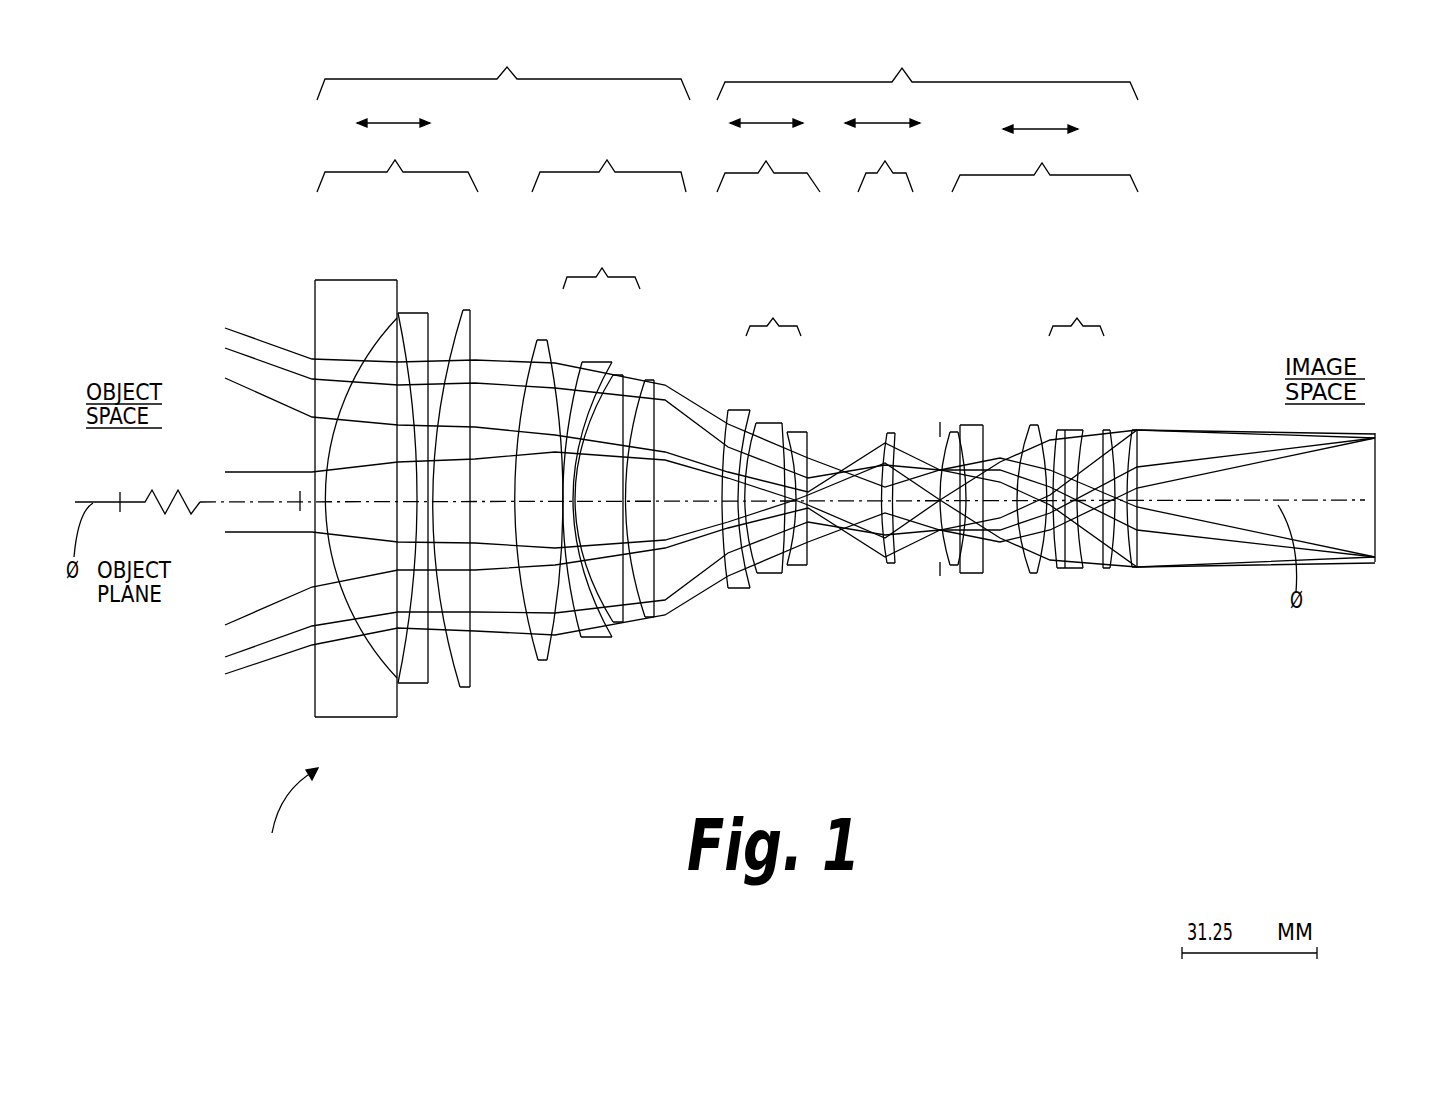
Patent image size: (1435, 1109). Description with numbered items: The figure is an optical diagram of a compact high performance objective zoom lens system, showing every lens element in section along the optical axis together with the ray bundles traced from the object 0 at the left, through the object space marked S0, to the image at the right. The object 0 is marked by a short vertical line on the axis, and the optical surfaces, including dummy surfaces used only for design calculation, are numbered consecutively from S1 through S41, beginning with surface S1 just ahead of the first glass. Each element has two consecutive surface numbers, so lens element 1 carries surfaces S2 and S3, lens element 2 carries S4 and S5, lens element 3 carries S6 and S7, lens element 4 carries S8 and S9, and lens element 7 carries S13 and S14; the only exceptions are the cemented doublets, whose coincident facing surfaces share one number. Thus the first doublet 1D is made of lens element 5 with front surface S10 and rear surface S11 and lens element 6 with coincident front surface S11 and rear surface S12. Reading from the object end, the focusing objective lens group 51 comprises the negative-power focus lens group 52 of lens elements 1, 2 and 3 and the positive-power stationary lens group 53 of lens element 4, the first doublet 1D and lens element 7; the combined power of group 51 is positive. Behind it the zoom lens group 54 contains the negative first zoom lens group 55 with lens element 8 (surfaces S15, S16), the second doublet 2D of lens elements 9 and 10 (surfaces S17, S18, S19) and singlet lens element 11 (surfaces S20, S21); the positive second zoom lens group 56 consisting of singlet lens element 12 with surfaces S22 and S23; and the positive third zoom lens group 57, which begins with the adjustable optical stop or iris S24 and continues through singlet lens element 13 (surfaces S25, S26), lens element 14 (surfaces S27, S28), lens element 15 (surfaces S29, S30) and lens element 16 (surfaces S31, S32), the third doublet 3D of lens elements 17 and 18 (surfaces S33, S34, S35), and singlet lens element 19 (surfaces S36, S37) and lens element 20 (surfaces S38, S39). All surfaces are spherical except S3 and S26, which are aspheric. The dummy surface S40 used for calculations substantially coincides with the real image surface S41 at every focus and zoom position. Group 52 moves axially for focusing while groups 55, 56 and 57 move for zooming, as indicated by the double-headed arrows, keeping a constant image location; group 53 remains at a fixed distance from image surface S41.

The object 0 is at (120, 519).
The lens element 1 is at (322, 472).
The lens element 2 is at (404, 503).
The lens element 3 is at (481, 520).
The lens element 4 is at (530, 500).
The lens element 5 is at (591, 525).
The lens element 6 is at (626, 527).
The lens element 7 is at (678, 496).
The lens element 8 is at (740, 515).
The lens element 9 is at (742, 519).
The lens element 10 is at (804, 490).
The lens element 11 is at (829, 484).
The lens element 12 is at (893, 549).
The lens element 13 is at (935, 548).
The lens element 14 is at (976, 556).
The lens element 15 is at (1006, 548).
The lens element 16 is at (1049, 557).
The lens element 17 is at (1098, 553).
The lens element 18 is at (1107, 534).
The lens element 19 is at (1142, 569).
The lens element 20 is at (1168, 544).
The focusing objective lens group 51 is at (503, 84).
The focus lens group 52 is at (397, 180).
The stationary lens group 53 is at (609, 180).
The zoom lens group 54 is at (927, 86).
The first zoom lens group 55 is at (771, 193).
The second zoom lens group 56 is at (890, 193).
The third zoom lens group 57 is at (1045, 182).
The first doublet 1D is at (601, 265).
The second doublet 2D is at (773, 308).
The third doublet 3D is at (1076, 308).
The object S0 is at (286, 814).
The lens surface S1 is at (297, 502).
The lens surface S2 is at (314, 675).
The lens surface S3 is at (332, 562).
The lens surface S4 is at (412, 438).
The lens surface S5 is at (430, 684).
The lens surface S6 is at (461, 690).
The lens surface S7 is at (471, 689).
The lens surface S8 is at (523, 596).
The lens surface S9 is at (551, 661).
The lens surface S10 is at (584, 640).
The lens surface S11 is at (575, 535).
The lens surface S12 is at (627, 625).
The lens surface S13 is at (652, 622).
The lens surface S14 is at (654, 618).
The lens surface S15 is at (726, 588).
The lens surface S16 is at (745, 590).
The lens surface S17 is at (758, 575).
The lens surface S18 is at (778, 578).
The lens surface S19 is at (725, 483).
The lens surface S20 is at (793, 567).
The lens surface S21 is at (808, 566).
The lens surface S22 is at (887, 565).
The lens surface S23 is at (896, 565).
The adjustable optical stop S24 is at (940, 577).
The lens surface S25 is at (952, 567).
The lens surface S26 is at (968, 575).
The lens surface S27 is at (983, 574).
The lens surface S28 is at (994, 572).
The lens surface S29 is at (1036, 575).
The lens surface S30 is at (1042, 574).
The lens surface S31 is at (1056, 575).
The lens surface S32 is at (1064, 574).
The lens surface S33 is at (1075, 574).
The lens surface S34 is at (1085, 575).
The lens surface S35 is at (1098, 575).
The lens surface S36 is at (1105, 574).
The lens surface S37 is at (1113, 574).
The lens surface S38 is at (1125, 572).
The lens surface S39 is at (1150, 567).
The dummy optical surface S40 is at (1370, 548).
The real image surface S41 is at (1376, 545).